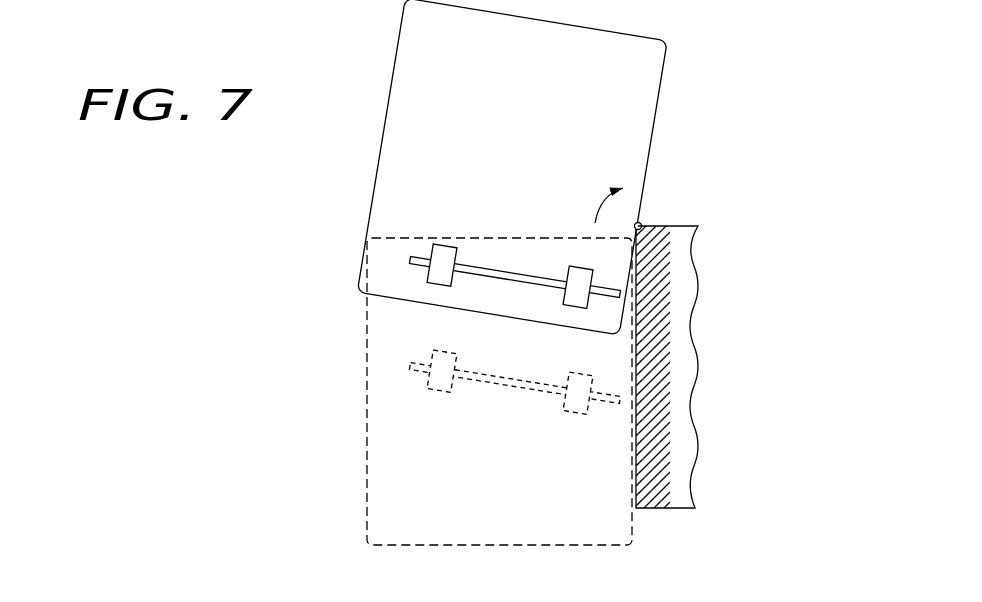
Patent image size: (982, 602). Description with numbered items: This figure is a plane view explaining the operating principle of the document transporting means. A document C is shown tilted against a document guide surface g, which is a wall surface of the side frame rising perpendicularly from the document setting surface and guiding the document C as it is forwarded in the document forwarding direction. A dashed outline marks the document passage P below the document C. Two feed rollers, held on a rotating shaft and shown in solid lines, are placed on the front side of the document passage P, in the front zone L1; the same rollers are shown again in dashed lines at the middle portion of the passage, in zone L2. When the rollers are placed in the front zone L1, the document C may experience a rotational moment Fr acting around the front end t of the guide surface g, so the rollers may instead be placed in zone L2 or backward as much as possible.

The document C is at (382, 138).
The front end of the guide surface t is at (641, 224).
The document guide surface g is at (633, 484).
The rotational moment Fr is at (598, 202).
The document passage P is at (468, 450).
The front zone L1 is at (434, 277).
The zone L2 is at (413, 377).